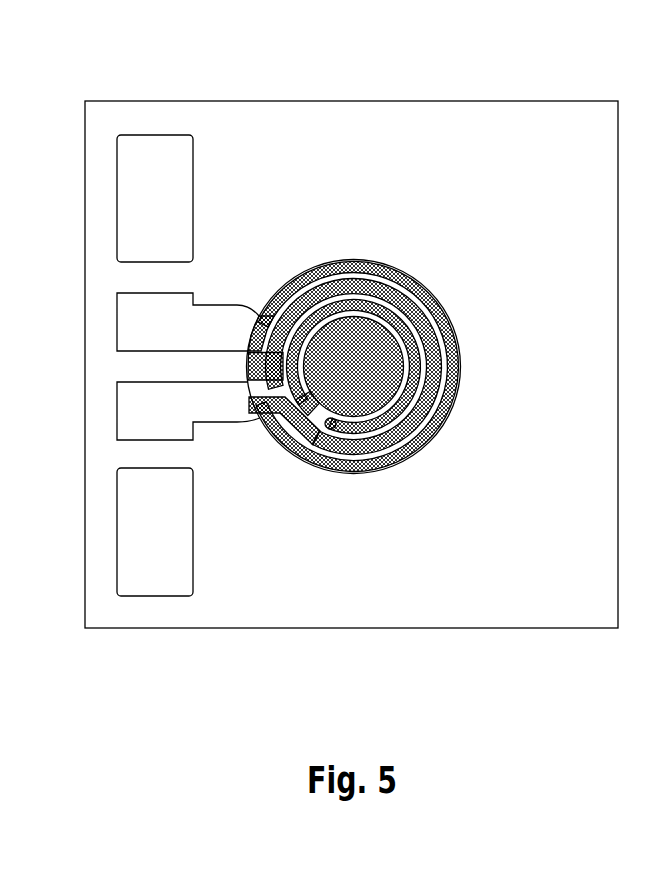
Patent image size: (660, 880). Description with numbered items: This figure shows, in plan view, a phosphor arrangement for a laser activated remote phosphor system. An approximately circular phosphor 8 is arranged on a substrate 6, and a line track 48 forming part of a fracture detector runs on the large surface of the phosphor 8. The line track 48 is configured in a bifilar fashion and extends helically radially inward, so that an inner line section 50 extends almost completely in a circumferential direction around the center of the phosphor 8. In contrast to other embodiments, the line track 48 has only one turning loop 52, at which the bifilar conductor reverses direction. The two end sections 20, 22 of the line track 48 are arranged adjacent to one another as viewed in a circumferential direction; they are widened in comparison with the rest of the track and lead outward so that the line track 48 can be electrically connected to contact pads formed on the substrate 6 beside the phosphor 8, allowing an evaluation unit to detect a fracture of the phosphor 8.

The substrate 6 is at (528, 600).
The phosphor 8 is at (366, 350).
The end section 20 is at (258, 330).
The end section 22 is at (262, 400).
The line track 48 is at (308, 273).
The inner line section 50 is at (363, 420).
The turning loop 52 is at (318, 427).